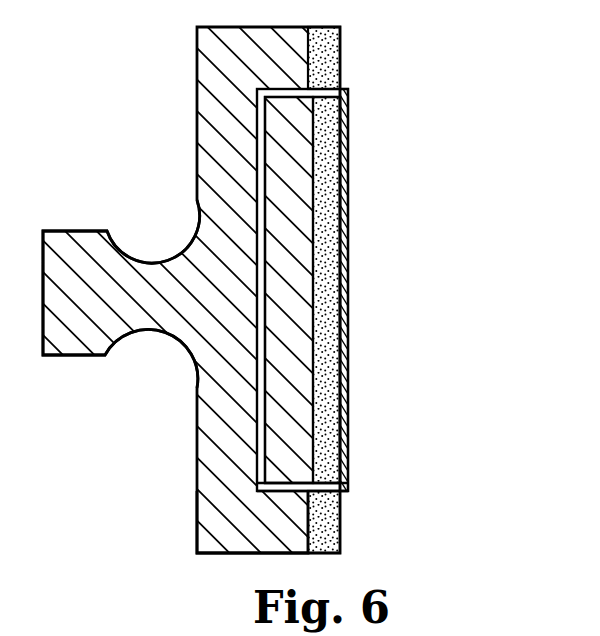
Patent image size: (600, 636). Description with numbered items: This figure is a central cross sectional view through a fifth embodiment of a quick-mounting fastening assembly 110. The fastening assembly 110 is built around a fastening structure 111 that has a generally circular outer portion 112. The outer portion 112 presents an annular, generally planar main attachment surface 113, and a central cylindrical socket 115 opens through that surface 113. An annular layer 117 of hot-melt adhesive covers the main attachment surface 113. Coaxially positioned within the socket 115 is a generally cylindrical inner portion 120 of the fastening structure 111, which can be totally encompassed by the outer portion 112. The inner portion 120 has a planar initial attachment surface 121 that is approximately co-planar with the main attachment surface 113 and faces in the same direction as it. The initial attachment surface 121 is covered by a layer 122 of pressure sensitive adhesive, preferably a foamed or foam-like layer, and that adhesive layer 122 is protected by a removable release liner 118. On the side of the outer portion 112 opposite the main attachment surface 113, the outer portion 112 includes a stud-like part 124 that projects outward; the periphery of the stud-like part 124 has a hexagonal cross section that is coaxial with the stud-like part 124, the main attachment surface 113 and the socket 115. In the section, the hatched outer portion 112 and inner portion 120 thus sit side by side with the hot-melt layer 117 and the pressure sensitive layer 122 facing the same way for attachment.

The quick-mounting fastening assembly 110 is at (300, 318).
The fastening structure 111 is at (189, 114).
The outer portion 112 is at (213, 510).
The main attachment surface 113 is at (320, 522).
The central cylindrical socket 115 is at (282, 480).
The annular layer of hot-melt adhesive 117 is at (326, 60).
The removable release liner 118 is at (346, 305).
The inner portion 120 is at (290, 176).
The initial attachment surface 121 is at (318, 213).
The layer of pressure sensitive adhesive 122 is at (345, 139).
The stud-like part 124 is at (63, 270).